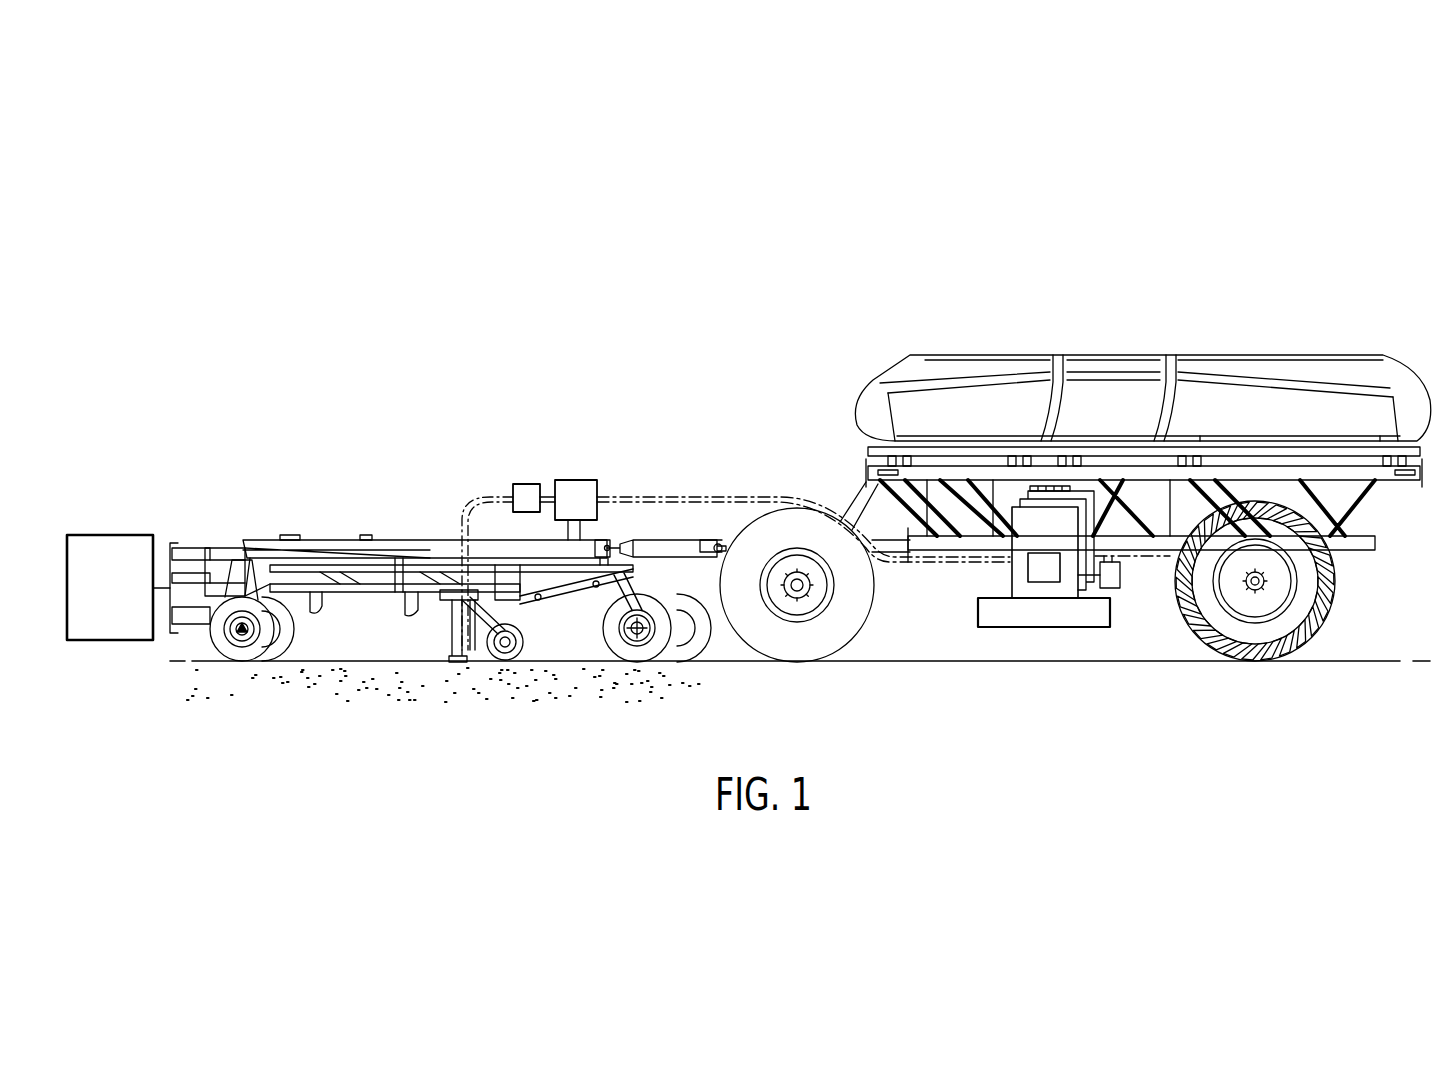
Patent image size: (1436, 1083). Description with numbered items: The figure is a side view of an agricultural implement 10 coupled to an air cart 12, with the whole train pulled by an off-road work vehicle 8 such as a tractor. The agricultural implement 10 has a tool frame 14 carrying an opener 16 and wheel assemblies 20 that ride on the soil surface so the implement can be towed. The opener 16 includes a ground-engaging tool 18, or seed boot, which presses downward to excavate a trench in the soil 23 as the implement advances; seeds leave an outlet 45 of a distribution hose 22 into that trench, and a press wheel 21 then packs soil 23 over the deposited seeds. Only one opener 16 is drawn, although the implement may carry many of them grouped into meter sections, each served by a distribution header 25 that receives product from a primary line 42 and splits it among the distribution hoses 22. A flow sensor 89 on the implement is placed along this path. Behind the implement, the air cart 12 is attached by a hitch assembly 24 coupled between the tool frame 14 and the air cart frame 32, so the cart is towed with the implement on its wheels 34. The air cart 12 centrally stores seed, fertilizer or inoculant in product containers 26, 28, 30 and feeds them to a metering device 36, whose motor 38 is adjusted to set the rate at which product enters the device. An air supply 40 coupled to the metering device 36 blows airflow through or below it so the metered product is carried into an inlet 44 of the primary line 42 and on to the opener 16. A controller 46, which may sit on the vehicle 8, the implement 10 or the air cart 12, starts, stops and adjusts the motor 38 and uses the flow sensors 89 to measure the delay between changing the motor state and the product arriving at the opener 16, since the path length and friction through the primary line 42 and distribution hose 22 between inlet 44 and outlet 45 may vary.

The off-road work vehicle 8 is at (133, 535).
The agricultural implement 10 is at (394, 490).
The air cart 12 is at (1145, 300).
The tool frame 14 is at (440, 540).
The opener 16 is at (472, 669).
The ground-engaging tool 18 is at (455, 663).
The wheel assemblies 20 is at (240, 662).
The press wheel 21 is at (523, 645).
The distribution hose 22 is at (486, 496).
The soil 23 is at (553, 656).
The hitch assembly 24 is at (622, 540).
The distribution header 25 is at (590, 480).
The product container 26 is at (988, 355).
The product container 28 is at (1113, 355).
The product container 30 is at (1291, 355).
The air cart frame 32 is at (1373, 517).
The wheels 34 is at (818, 640).
The metering device 36 is at (996, 556).
The motor 38 is at (1050, 552).
The air supply 40 is at (1122, 575).
The primary line 42 is at (686, 492).
The inlet 44 is at (1002, 564).
The outlet 45 is at (472, 658).
The controller 46 is at (1010, 627).
The flow sensor 89 is at (533, 484).